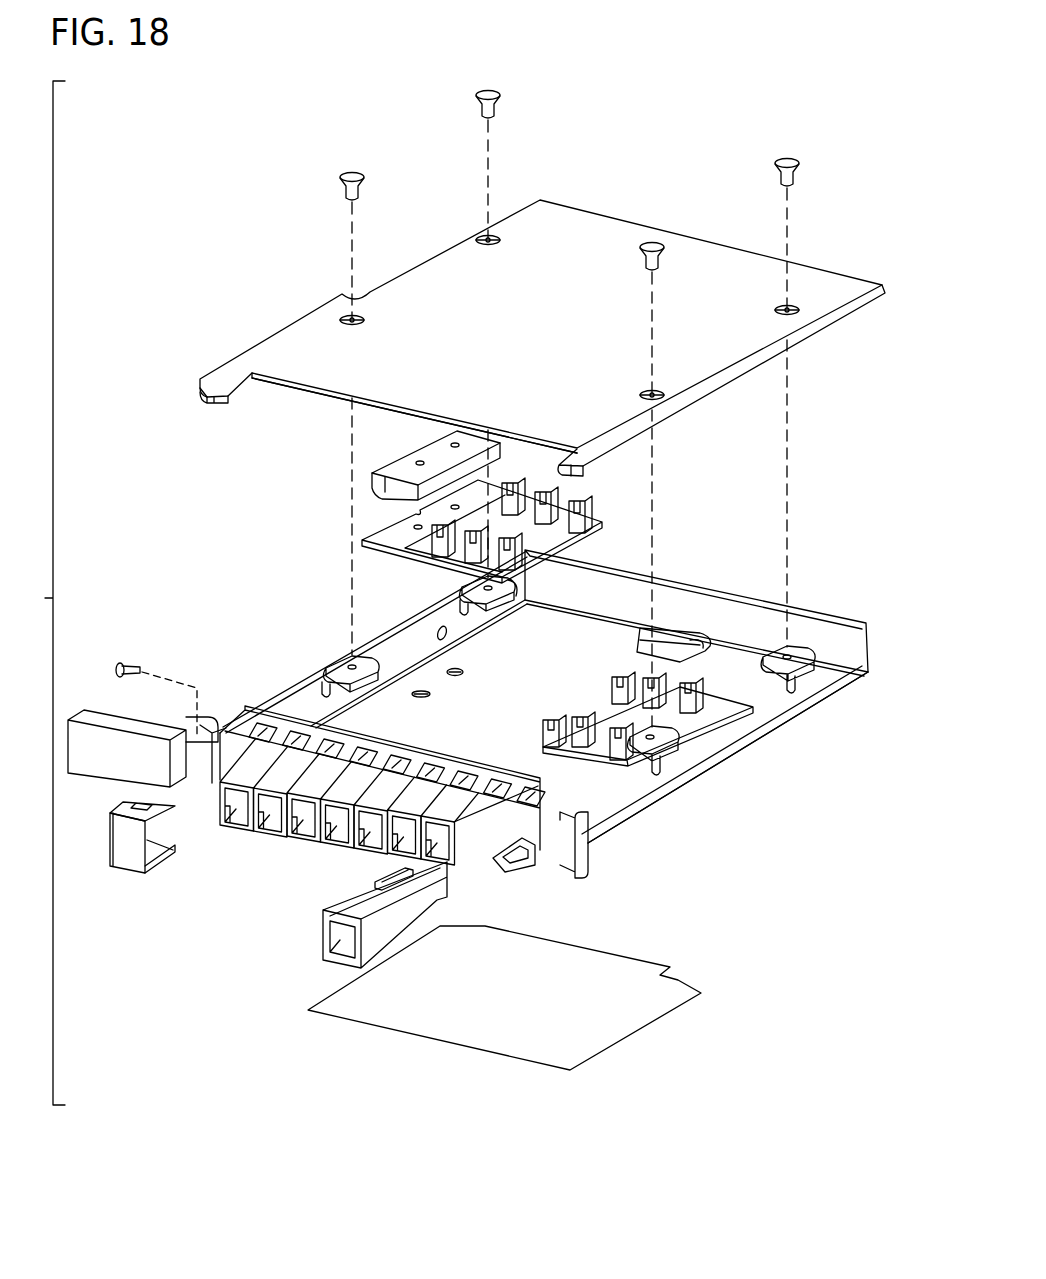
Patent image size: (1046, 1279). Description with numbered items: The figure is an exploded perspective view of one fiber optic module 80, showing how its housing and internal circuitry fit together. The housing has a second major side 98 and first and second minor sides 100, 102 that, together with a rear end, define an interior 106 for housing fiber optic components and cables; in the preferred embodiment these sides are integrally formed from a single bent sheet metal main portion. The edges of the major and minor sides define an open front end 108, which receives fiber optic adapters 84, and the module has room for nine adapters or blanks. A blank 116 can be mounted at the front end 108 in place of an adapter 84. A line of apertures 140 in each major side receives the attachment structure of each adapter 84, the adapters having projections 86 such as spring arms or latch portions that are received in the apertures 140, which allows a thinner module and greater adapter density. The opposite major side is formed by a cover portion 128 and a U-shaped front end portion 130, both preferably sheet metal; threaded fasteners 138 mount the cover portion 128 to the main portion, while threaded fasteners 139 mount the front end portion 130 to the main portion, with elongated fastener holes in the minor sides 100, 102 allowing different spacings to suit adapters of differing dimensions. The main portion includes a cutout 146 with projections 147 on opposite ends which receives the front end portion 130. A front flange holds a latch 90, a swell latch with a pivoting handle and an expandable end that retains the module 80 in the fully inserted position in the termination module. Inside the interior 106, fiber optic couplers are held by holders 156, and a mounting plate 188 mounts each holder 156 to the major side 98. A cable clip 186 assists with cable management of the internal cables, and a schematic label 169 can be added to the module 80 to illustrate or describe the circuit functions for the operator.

The fiber optic module 80 is at (40, 593).
The threaded fasteners 138 is at (500, 97).
The cover portion 128 is at (590, 216).
The projections 147 is at (209, 396).
The cutout 146 is at (298, 393).
The mounting plate 188 is at (413, 447).
The holders 156 is at (578, 538).
The cable clip 186 is at (678, 628).
The first minor side 100 is at (760, 720).
The interior 106 is at (534, 685).
The second major side 98 is at (390, 697).
The second minor side 102 is at (292, 688).
The threaded fasteners 139 is at (133, 667).
The latch 90 is at (98, 773).
The blank 116 is at (128, 873).
The apertures 140 is at (427, 765).
The fiber optic adapters 84 is at (268, 837).
The projections 86 is at (398, 882).
The front end portion 130 is at (580, 797).
The open front end 108 is at (513, 865).
The schematic label 169 is at (620, 1037).